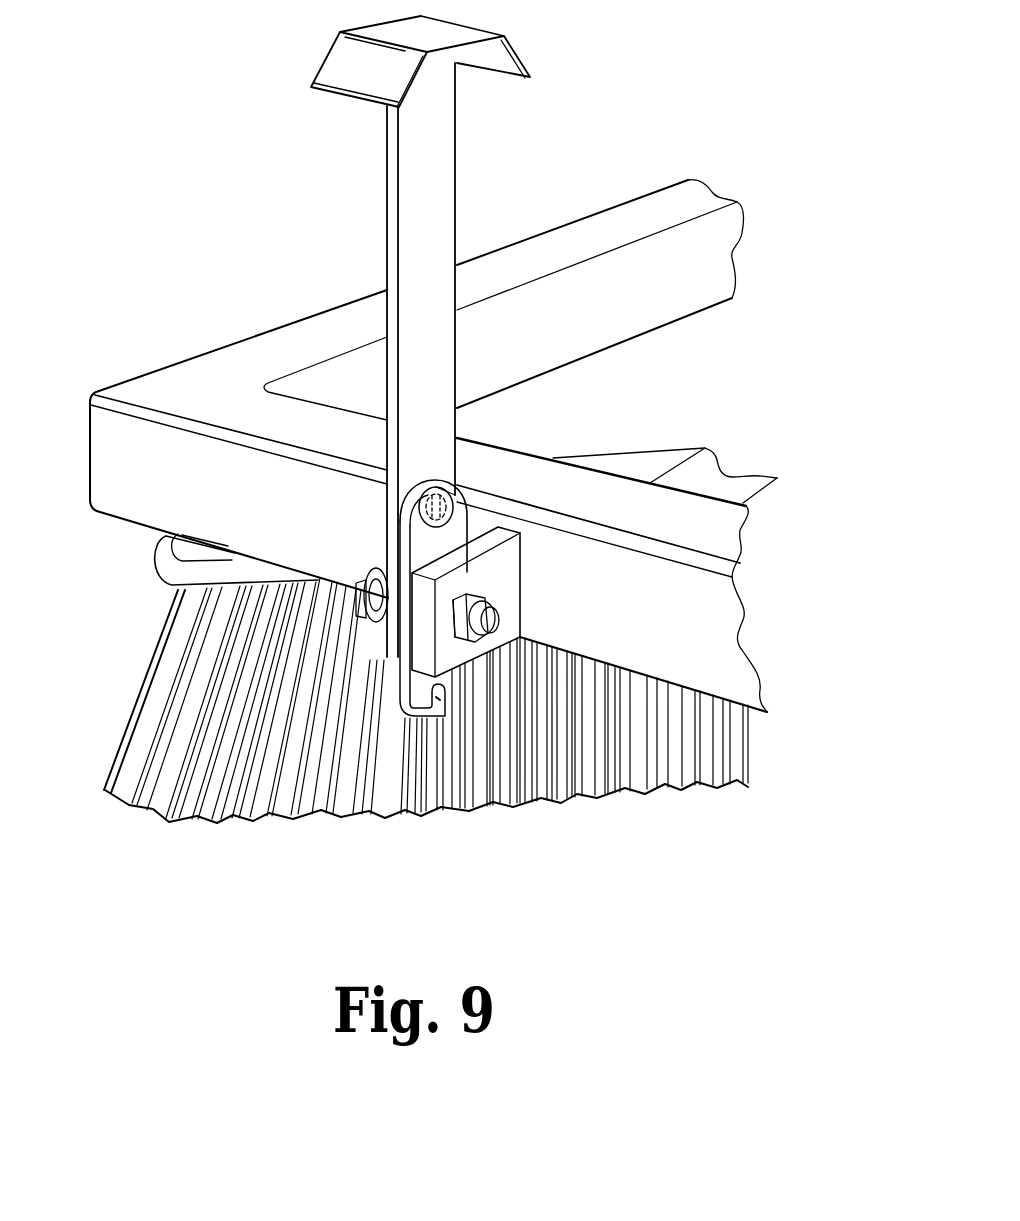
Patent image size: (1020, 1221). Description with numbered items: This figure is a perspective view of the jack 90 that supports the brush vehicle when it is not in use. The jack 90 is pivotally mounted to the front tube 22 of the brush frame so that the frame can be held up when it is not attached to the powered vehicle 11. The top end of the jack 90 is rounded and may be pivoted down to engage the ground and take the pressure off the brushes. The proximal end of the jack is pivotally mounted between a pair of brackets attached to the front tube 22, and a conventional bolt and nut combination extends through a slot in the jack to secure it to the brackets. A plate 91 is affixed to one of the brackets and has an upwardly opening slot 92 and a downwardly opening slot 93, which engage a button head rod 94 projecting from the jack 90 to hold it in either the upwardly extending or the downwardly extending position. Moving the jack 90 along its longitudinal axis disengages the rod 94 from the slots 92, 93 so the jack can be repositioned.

The jack 90 is at (448, 167).
The powered vehicle 11 is at (700, 270).
The front tube 22 is at (718, 536).
The button head rod 94 is at (458, 496).
The upwardly opening slot 92 is at (420, 488).
The plate 91 is at (457, 530).
The downwardly opening slot 93 is at (447, 708).